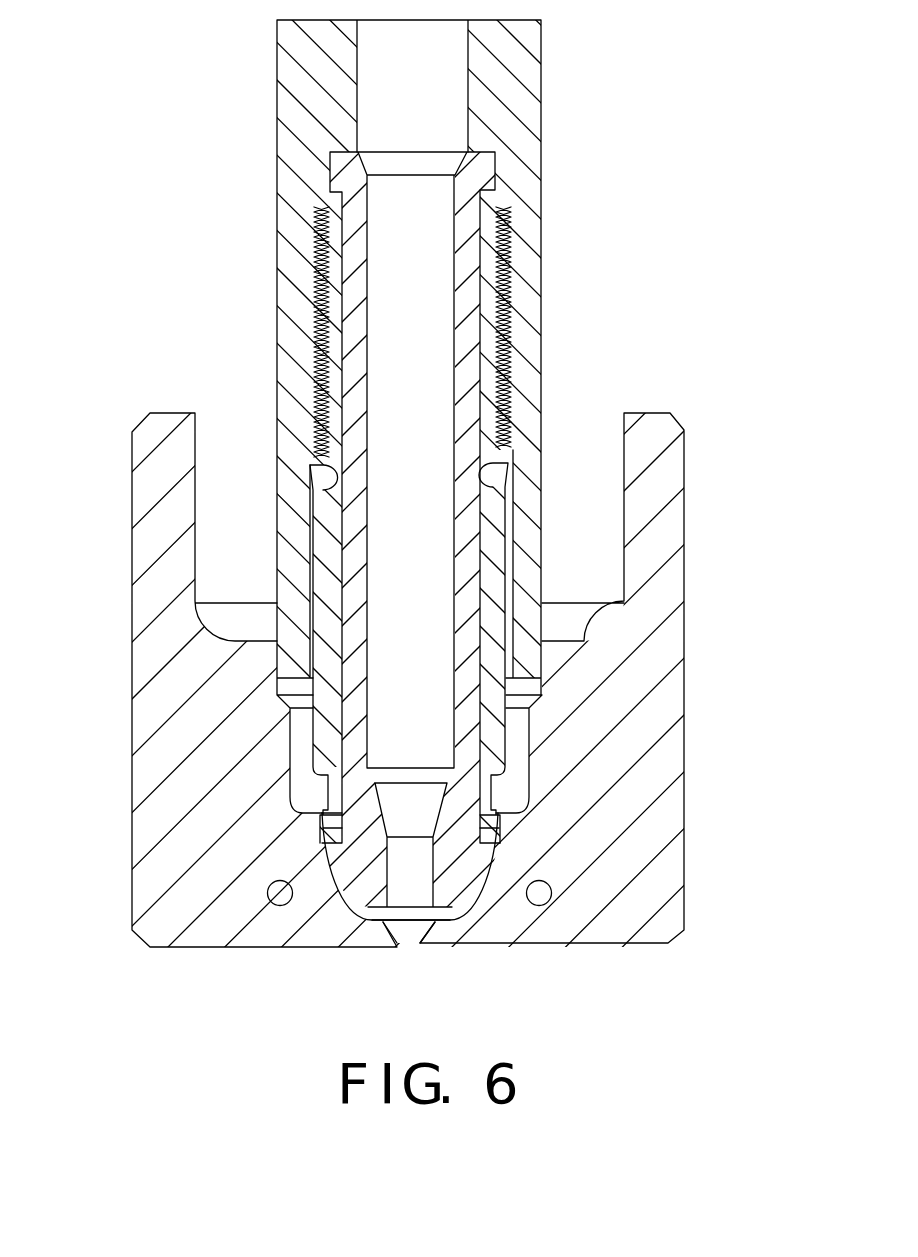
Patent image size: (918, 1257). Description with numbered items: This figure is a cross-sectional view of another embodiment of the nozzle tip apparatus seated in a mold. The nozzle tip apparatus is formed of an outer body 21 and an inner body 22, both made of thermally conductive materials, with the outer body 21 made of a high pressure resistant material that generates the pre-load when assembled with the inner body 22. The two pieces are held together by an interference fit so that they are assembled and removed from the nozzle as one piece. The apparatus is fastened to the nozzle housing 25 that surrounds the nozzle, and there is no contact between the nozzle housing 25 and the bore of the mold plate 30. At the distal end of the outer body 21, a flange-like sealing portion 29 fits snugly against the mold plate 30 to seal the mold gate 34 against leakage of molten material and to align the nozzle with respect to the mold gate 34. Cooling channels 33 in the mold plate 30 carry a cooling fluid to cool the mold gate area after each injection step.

The outer body 21 is at (315, 500).
The inner body 22 is at (352, 160).
The nozzle housing 25 is at (541, 258).
The sealing portion 29 is at (322, 832).
The mold plate 30 is at (660, 765).
The cooling channels 33 is at (268, 880).
The mold gate 34 is at (407, 930).